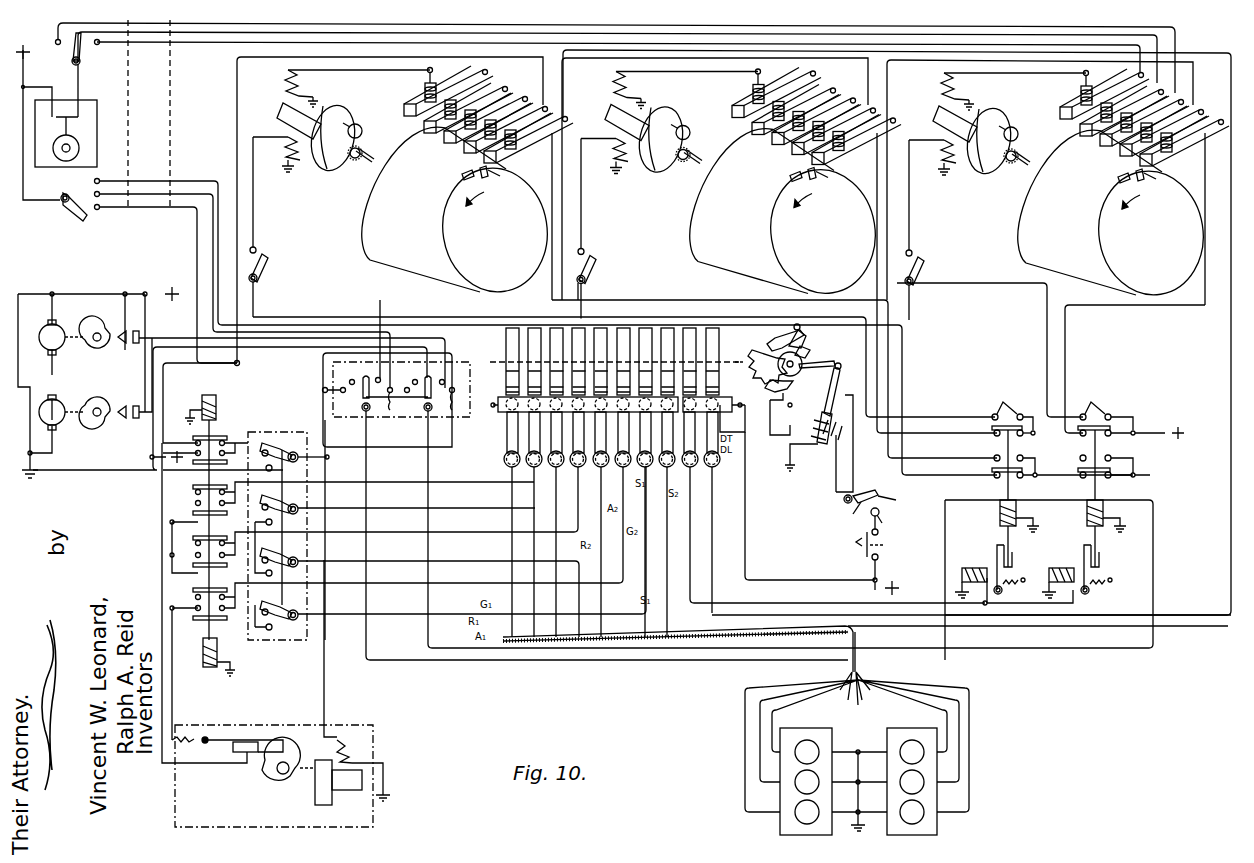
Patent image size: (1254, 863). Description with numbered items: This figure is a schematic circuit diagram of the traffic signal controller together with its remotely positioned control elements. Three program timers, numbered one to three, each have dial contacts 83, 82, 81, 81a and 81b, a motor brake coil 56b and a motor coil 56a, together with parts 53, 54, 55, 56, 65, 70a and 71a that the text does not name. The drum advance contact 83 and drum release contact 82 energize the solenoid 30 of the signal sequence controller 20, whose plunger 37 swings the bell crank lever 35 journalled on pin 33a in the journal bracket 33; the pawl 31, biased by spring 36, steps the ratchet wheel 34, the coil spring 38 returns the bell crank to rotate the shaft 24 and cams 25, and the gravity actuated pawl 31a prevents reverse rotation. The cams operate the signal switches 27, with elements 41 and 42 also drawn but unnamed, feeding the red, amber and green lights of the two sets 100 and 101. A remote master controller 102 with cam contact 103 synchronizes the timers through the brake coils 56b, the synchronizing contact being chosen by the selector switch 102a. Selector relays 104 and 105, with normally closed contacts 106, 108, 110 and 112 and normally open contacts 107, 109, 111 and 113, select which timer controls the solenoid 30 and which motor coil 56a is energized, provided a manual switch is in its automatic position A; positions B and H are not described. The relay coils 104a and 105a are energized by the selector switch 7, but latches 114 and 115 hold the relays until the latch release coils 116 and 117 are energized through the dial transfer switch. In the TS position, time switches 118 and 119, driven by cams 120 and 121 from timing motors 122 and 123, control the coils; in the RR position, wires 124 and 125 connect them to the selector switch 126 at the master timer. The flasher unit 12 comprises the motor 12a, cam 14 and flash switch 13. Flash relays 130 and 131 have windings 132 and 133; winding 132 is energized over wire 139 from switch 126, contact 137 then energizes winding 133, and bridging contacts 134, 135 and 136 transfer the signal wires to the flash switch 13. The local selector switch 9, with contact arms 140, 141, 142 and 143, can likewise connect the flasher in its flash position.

The master controller 102 is at (92, 104).
The cam contact 103 is at (64, 97).
The selector switch 102a is at (83, 56).
The selector switch at the master timer 126 is at (65, 216).
The inter-connecting wire 124 is at (136, 205).
The inter-connecting wire 125 is at (142, 180).
The interconnecting wire 139 is at (160, 207).
The timing motor 123 is at (60, 347).
The timing motor 122 is at (60, 422).
The actuating cam 121 is at (94, 320).
The actuating cam 120 is at (99, 431).
The time switch 119 is at (129, 346).
The time switch 118 is at (136, 420).
The actuating winding 132 is at (199, 405).
The flash relay 131 is at (212, 574).
The normally open contact 137 is at (192, 462).
The flash relay 130 is at (195, 477).
The bridging contacts 134 is at (200, 510).
The bridging contacts 135 is at (200, 539).
The bridging contacts 136 is at (175, 611).
The actuating winding 133 is at (198, 665).
The selector switch 9 is at (246, 632).
The contact arm 140 is at (288, 446).
The contact arm 141 is at (296, 502).
The contact arm 142 is at (296, 555).
The contact arm 143 is at (296, 608).
The flasher unit 12 is at (290, 722).
The flash switch 13 is at (232, 748).
The actuating cam 14 is at (266, 780).
The electric motor 12a is at (340, 791).
The selector switch 7 is at (318, 376).
The cams 25 is at (534, 353).
The contact bar 41 is at (498, 396).
The signal switches 27 is at (507, 443).
The terminals 42 is at (510, 466).
The signal sequence controller 20 is at (769, 337).
The rotatable shaft 24 is at (745, 353).
The pawl 31 is at (786, 327).
The spring 36 is at (808, 327).
The bell crank lever 35 is at (808, 340).
The pin 33a is at (782, 362).
The shaft journal bracket 33 is at (752, 374).
The coil spring 38 is at (765, 386).
The ratchet wheel 34 is at (785, 384).
The gravity actuated pawl 31a is at (795, 407).
The plunger 37 is at (828, 416).
The actuating solenoid 30 is at (820, 429).
The automatic position A is at (876, 498).
The switch lever B is at (851, 514).
The horn button H is at (877, 551).
The normally open contacts 111 is at (1003, 403).
The normally open contacts 113 is at (1095, 403).
The selector relay 104 is at (1010, 441).
The normally closed contacts 112 is at (1083, 435).
The selector relay 105 is at (1100, 442).
The normally closed contacts 110 is at (992, 441).
The normally open contacts 107 is at (994, 456).
The normally closed contacts 106 is at (995, 477).
The normally open contacts 109 is at (1082, 458).
The normally closed contacts 108 is at (1082, 476).
The actuating coil 104a is at (994, 511).
The actuating coil 105a is at (1086, 508).
The latch 114 is at (997, 543).
The latch 115 is at (1084, 543).
The latch release coil 116 is at (970, 565).
The latch release coil 117 is at (1058, 565).
The set of signal lights 100 is at (832, 736).
The set of signal lights 101 is at (904, 730).
The program timer motor brake coil 56b is at (944, 82).
The motor 56 is at (938, 111).
The gear 65 is at (1019, 134).
The gear 54 is at (1009, 163).
The shaft 53 is at (1026, 171).
The program timer motor coil 56a is at (936, 154).
The drum 55 is at (1067, 261).
The contact 70a is at (1122, 183).
The contact 71a is at (1148, 178).
The selectable synchronizing contact 81b is at (1065, 109).
The selectable synchronizing contact 81a is at (1092, 134).
The selectable synchronizing contact 81 is at (1103, 146).
The drum release contact 82 is at (1129, 150).
The drum advance contact 83 is at (1204, 143).